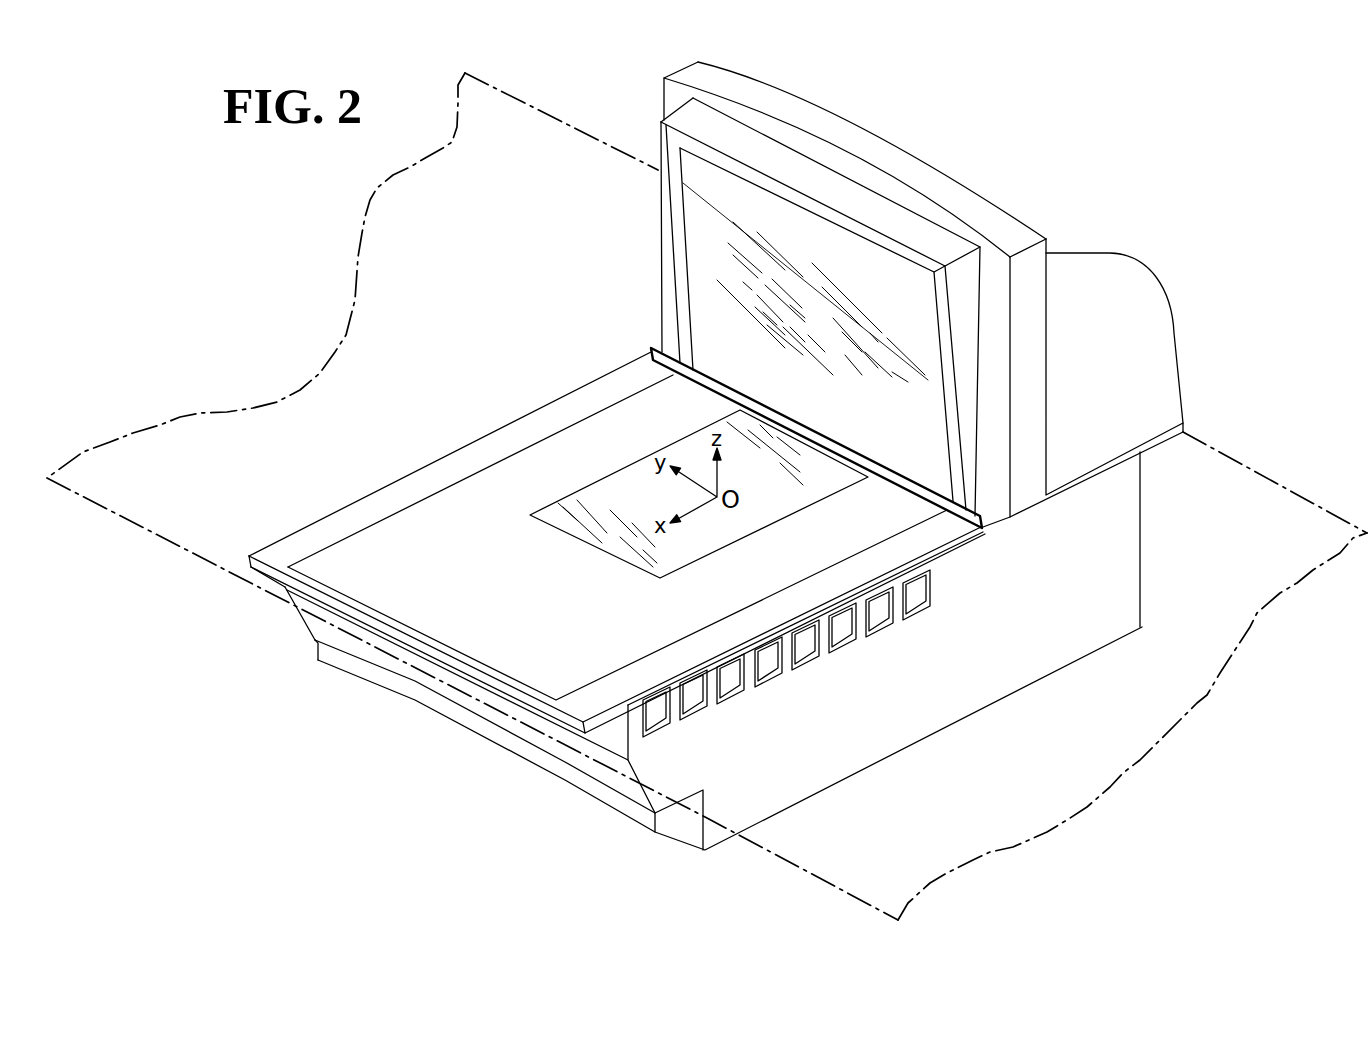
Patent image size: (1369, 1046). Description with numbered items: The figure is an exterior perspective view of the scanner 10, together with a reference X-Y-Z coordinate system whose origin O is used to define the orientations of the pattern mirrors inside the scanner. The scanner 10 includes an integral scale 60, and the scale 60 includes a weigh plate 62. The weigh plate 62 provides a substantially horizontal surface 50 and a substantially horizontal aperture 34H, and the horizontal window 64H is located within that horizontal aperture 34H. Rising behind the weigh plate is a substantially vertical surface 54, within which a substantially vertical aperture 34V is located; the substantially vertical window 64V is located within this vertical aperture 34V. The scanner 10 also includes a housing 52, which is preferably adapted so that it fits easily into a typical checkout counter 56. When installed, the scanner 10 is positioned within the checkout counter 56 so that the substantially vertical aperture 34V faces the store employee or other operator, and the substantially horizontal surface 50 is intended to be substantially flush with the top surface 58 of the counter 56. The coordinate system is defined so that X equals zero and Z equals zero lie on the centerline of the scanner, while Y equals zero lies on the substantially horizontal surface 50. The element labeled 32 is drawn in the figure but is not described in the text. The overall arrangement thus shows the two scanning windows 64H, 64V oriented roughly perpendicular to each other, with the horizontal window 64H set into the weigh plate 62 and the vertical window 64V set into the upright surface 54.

The scanner 10 is at (935, 153).
The vertical housing section 32 is at (1180, 334).
The substantially vertical aperture 34V is at (940, 340).
The substantially horizontal aperture 34H is at (597, 550).
The substantially horizontal surface 50 is at (890, 523).
The housing 52 is at (975, 690).
The substantially vertical surface 54 is at (945, 378).
The checkout counter 56 is at (1274, 484).
The top surface 58 is at (1190, 677).
The integral scale 60 is at (428, 624).
The weigh plate 62 is at (550, 687).
The substantially vertical window 64V is at (784, 222).
The horizontal window 64H is at (597, 488).